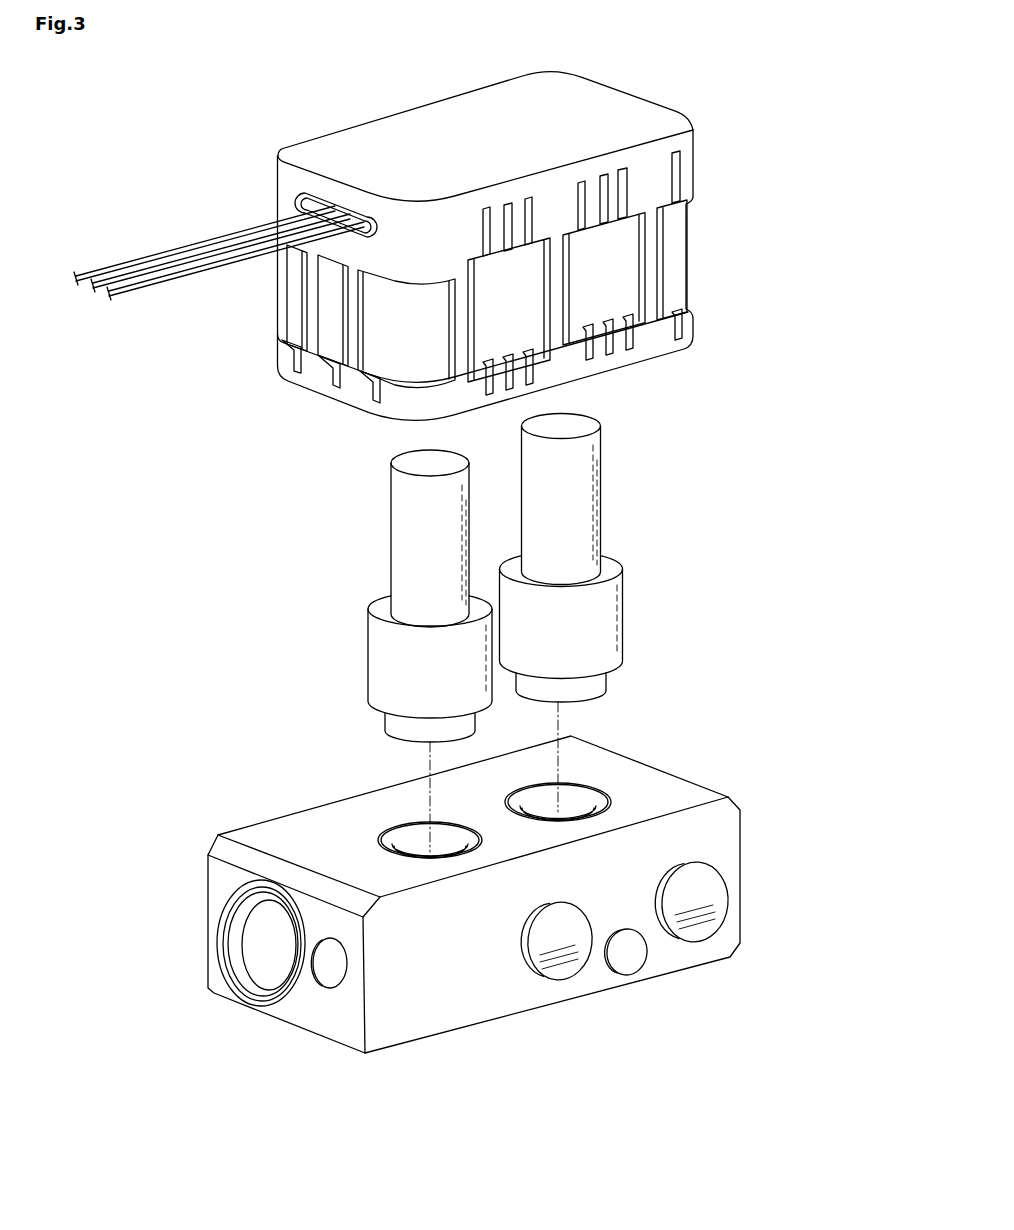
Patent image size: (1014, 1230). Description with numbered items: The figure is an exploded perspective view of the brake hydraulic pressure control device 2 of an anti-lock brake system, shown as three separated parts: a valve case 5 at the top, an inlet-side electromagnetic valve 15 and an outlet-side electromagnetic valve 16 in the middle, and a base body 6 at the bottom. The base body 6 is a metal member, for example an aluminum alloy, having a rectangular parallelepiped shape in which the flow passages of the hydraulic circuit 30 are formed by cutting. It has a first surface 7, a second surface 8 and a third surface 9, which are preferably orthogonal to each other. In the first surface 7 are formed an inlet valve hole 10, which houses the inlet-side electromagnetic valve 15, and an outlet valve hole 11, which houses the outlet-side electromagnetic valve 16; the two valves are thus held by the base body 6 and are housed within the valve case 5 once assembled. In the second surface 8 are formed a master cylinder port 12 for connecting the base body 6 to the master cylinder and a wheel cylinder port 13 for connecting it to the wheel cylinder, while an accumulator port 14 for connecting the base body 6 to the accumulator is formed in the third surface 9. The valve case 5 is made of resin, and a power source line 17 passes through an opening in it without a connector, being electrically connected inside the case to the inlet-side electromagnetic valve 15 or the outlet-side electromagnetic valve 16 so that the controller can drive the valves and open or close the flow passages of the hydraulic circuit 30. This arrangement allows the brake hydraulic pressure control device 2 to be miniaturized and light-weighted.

The brake hydraulic pressure control device 2 is at (827, 330).
The valve case 5 is at (690, 160).
The base body 6 is at (480, 884).
The first surface 7 is at (267, 837).
The second surface 8 is at (500, 987).
The third surface 9 is at (315, 1018).
The inlet valve hole 10 is at (587, 785).
The outlet valve hole 11 is at (393, 822).
The master cylinder port 12 is at (728, 893).
The wheel cylinder port 13 is at (558, 978).
The accumulator port 14 is at (216, 953).
The inlet-side electromagnetic valve 15 is at (583, 490).
The outlet-side electromagnetic valve 16 is at (400, 517).
The power source line 17 is at (197, 245).
The hydraulic circuit 30 is at (198, 913).